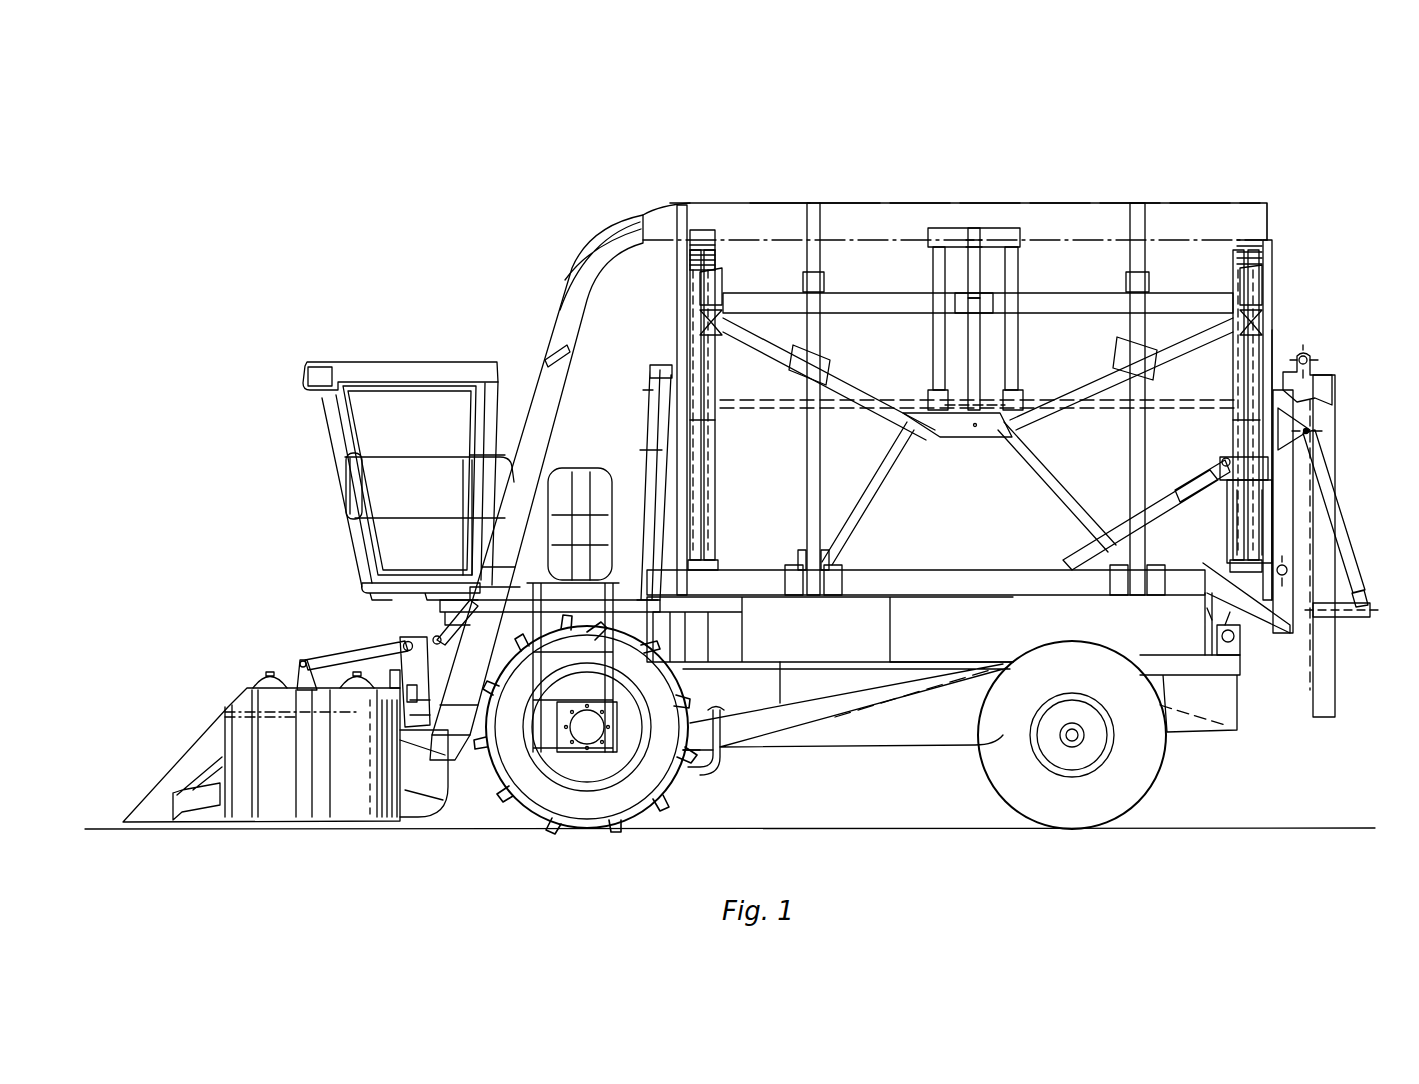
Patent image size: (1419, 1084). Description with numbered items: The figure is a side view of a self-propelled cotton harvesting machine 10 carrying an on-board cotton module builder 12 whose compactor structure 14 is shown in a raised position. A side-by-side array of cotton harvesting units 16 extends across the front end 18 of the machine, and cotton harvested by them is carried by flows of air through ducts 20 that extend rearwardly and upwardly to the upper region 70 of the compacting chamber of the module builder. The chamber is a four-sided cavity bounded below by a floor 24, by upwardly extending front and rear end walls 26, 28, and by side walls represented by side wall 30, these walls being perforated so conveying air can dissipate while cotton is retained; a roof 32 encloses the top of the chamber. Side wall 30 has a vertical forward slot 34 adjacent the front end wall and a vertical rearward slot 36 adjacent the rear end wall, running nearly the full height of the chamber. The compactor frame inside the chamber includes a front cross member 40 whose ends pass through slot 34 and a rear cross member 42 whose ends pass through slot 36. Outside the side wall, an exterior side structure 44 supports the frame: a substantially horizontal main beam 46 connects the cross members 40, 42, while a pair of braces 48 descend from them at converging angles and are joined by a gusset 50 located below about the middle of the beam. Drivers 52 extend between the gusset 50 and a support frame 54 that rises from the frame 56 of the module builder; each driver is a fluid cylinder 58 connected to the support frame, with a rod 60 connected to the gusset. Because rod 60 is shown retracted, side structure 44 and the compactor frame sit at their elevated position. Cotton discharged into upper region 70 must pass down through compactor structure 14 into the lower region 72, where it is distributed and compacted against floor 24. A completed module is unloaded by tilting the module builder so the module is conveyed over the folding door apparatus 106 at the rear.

The cotton harvesting machine 10 is at (1318, 168).
The on-board cotton module builder 12 is at (1285, 295).
The compactor structure 14 is at (1080, 280).
The cotton harvesting units 16 is at (243, 689).
The front end 18 is at (410, 636).
The ducts 20 is at (575, 278).
The floor 24 is at (899, 568).
The front end wall 26 is at (677, 312).
The rear end wall 28 is at (1275, 330).
The side wall 30 is at (1003, 547).
The roof 32 is at (875, 205).
The vertical forward slot 34 is at (707, 215).
The vertical rearward slot 36 is at (1238, 240).
The front cross member 40 is at (690, 268).
The rear cross member 42 is at (1260, 276).
The exterior side structure 44 is at (852, 215).
The main beam 46 is at (887, 318).
The braces 48 is at (856, 400).
The gusset 50 is at (953, 438).
The drivers 52 is at (990, 350).
The support frame 54 is at (1008, 225).
The frame 56 is at (775, 597).
The fluid cylinder 58 is at (953, 228).
The rod 60 is at (998, 428).
The upper region 70 is at (905, 215).
The lower region 72 is at (1176, 530).
The folding door apparatus 106 is at (1337, 690).